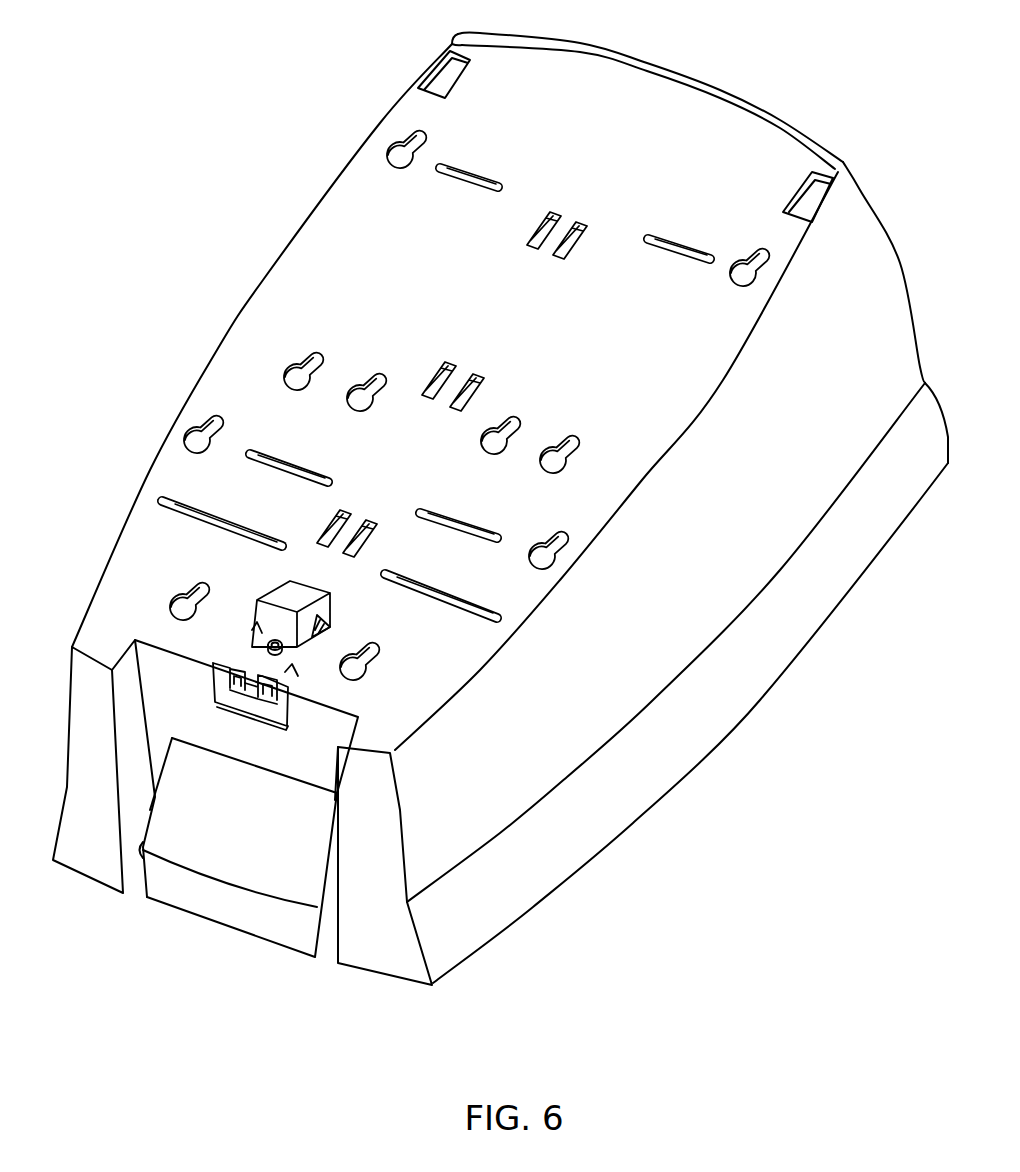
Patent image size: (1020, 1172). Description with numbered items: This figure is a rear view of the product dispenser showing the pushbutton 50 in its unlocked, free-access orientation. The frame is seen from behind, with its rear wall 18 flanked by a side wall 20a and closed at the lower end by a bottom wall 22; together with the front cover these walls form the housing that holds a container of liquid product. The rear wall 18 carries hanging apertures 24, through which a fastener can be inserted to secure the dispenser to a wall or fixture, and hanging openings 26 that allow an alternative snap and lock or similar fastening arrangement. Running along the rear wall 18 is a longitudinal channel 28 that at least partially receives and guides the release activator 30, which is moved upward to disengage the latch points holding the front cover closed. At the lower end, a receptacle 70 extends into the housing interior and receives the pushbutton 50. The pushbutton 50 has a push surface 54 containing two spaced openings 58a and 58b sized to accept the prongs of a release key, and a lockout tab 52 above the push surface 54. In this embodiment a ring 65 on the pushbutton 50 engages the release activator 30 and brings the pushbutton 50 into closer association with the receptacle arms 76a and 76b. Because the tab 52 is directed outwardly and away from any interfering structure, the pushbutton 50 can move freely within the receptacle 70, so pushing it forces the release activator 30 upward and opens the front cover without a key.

The rear wall 18 is at (411, 479).
The side wall 20a is at (775, 509).
The bottom wall 22 is at (390, 945).
The hanging apertures 24 is at (392, 170).
The hanging openings 26 is at (472, 168).
The longitudinal channel 28 is at (337, 527).
The release activator 30 is at (300, 598).
The pushbutton 50 is at (278, 652).
The lockout member or tab 52 is at (250, 650).
The push surface 54 is at (246, 703).
The spaced opening 58a is at (232, 690).
The spaced opening 58b is at (262, 710).
The ring 65 is at (284, 646).
The receptacle 70 is at (326, 612).
The receptacle arm 76a is at (245, 632).
The receptacle arm 76b is at (292, 675).